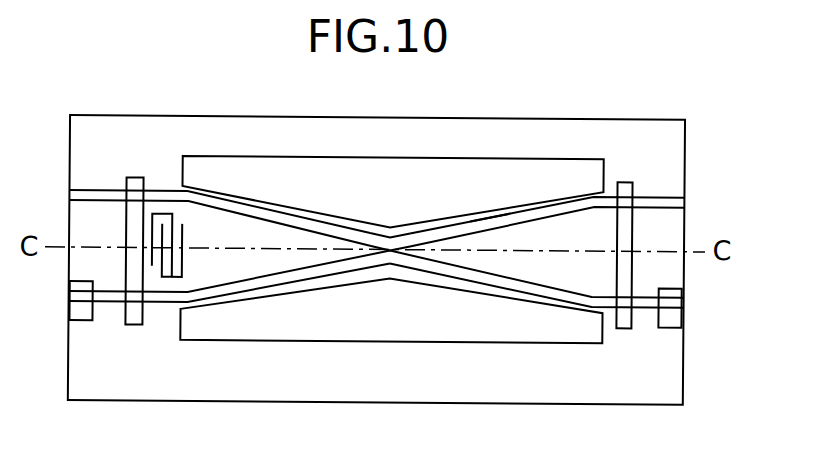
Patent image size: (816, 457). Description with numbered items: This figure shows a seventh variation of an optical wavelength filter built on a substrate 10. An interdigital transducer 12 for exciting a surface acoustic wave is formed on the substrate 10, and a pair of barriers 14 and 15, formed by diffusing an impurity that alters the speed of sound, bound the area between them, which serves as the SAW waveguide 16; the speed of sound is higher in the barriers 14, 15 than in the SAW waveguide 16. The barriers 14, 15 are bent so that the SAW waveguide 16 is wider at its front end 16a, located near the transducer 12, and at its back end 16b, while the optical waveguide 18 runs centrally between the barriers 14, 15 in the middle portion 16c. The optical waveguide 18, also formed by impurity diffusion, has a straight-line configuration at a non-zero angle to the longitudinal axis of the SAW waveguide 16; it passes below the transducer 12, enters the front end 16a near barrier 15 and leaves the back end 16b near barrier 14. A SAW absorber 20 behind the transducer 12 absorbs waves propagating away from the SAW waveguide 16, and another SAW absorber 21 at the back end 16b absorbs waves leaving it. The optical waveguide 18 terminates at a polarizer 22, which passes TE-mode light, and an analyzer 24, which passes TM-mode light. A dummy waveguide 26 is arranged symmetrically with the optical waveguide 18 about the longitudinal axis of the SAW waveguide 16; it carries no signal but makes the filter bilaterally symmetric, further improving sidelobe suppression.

The substrate 10 is at (688, 366).
The interdigital transducer 12 is at (166, 278).
The barrier 14 is at (289, 166).
The barrier 15 is at (272, 333).
The SAW waveguide 16 is at (414, 276).
The front end of SAW waveguide 16a is at (187, 237).
The back end of SAW waveguide 16b is at (610, 226).
The middle portion of SAW waveguide 16c is at (391, 224).
The optical waveguide 18 is at (505, 284).
The SAW absorber 20 is at (130, 327).
The SAW absorber 21 is at (630, 177).
The polarizer 22 is at (79, 307).
The analyzer 24 is at (673, 311).
The dummy waveguide 26 is at (491, 218).